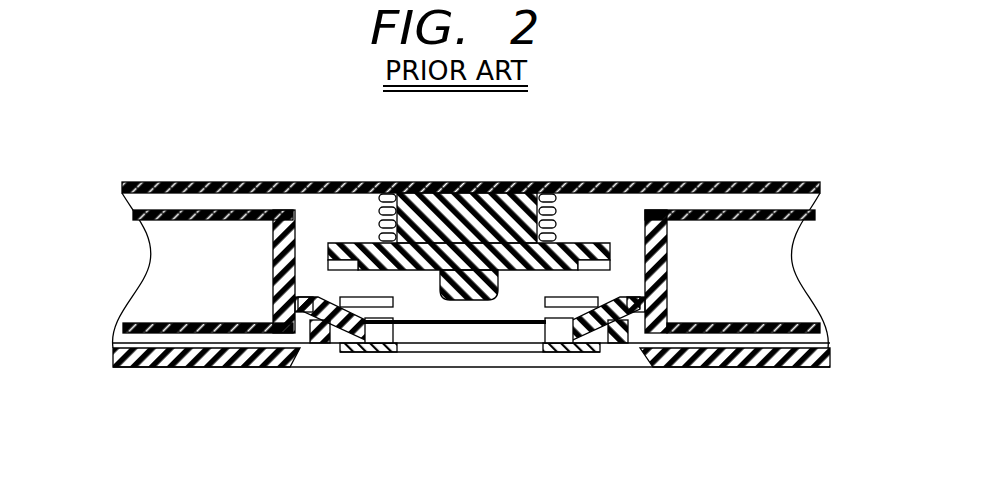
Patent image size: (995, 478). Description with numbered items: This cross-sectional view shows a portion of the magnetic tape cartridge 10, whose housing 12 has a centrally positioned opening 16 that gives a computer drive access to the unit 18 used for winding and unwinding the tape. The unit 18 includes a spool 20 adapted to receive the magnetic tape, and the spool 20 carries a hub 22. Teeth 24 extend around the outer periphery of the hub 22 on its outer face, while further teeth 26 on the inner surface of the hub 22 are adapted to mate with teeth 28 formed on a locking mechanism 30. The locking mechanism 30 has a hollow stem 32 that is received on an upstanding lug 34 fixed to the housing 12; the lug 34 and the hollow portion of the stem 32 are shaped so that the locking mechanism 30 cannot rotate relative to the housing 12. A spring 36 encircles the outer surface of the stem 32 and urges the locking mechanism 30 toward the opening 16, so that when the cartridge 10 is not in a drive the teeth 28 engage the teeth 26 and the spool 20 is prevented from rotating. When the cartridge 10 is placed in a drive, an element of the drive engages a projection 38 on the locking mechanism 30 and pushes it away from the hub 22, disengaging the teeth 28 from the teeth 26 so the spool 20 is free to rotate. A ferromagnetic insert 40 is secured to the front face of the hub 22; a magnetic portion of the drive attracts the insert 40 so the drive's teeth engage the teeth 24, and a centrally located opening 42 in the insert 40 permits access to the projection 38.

The cartridge 10 is at (395, 182).
The housing 12 is at (235, 182).
The centrally positioned opening 16 is at (294, 370).
The unit 18 is at (617, 370).
The spool 20 is at (190, 182).
The hub 22 is at (323, 372).
The teeth 24 is at (230, 371).
The teeth 26 is at (318, 284).
The teeth 28 is at (313, 247).
The locking mechanism 30 is at (596, 247).
The hollow stem 32 is at (530, 182).
The upstanding lug 34 is at (487, 182).
The spring 36 is at (364, 182).
The projection 38 is at (498, 291).
The ferromagnetic insert 40 is at (553, 370).
The centrally located opening 42 is at (420, 368).